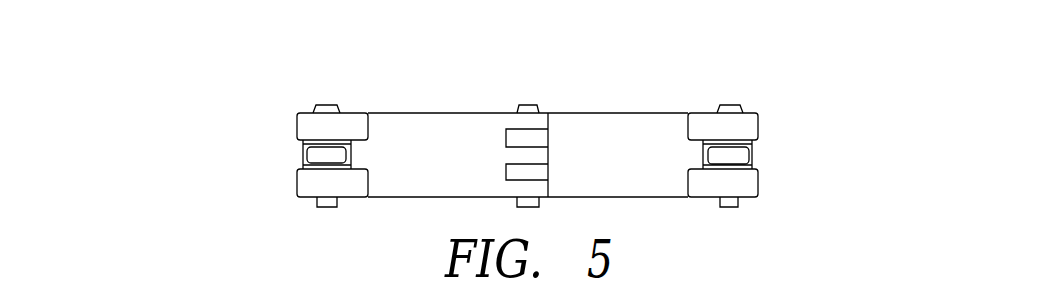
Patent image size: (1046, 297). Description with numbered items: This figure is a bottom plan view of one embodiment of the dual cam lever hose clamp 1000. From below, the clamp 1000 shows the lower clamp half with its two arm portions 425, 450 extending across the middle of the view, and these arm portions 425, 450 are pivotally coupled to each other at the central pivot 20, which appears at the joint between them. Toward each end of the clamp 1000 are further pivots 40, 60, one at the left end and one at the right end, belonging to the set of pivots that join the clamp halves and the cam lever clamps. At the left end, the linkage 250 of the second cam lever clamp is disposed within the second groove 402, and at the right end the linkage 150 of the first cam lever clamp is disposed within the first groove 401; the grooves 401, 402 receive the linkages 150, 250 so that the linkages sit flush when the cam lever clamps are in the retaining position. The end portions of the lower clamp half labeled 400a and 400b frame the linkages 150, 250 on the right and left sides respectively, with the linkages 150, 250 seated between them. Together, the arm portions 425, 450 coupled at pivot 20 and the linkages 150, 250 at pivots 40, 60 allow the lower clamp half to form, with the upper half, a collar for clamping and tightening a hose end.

The dual cam lever hose clamp 1000 is at (494, 140).
The pivot 20 is at (527, 105).
The pivot 40 is at (325, 105).
The pivot 60 is at (728, 105).
The arm portion 425 is at (428, 147).
The arm portion 450 is at (632, 145).
The second groove 402 is at (240, 146).
The first groove 401 is at (815, 146).
The linkage 250 is at (302, 150).
The linkage 150 is at (752, 150).
The second end cap 400b is at (297, 183).
The first end cap 400a is at (759, 180).